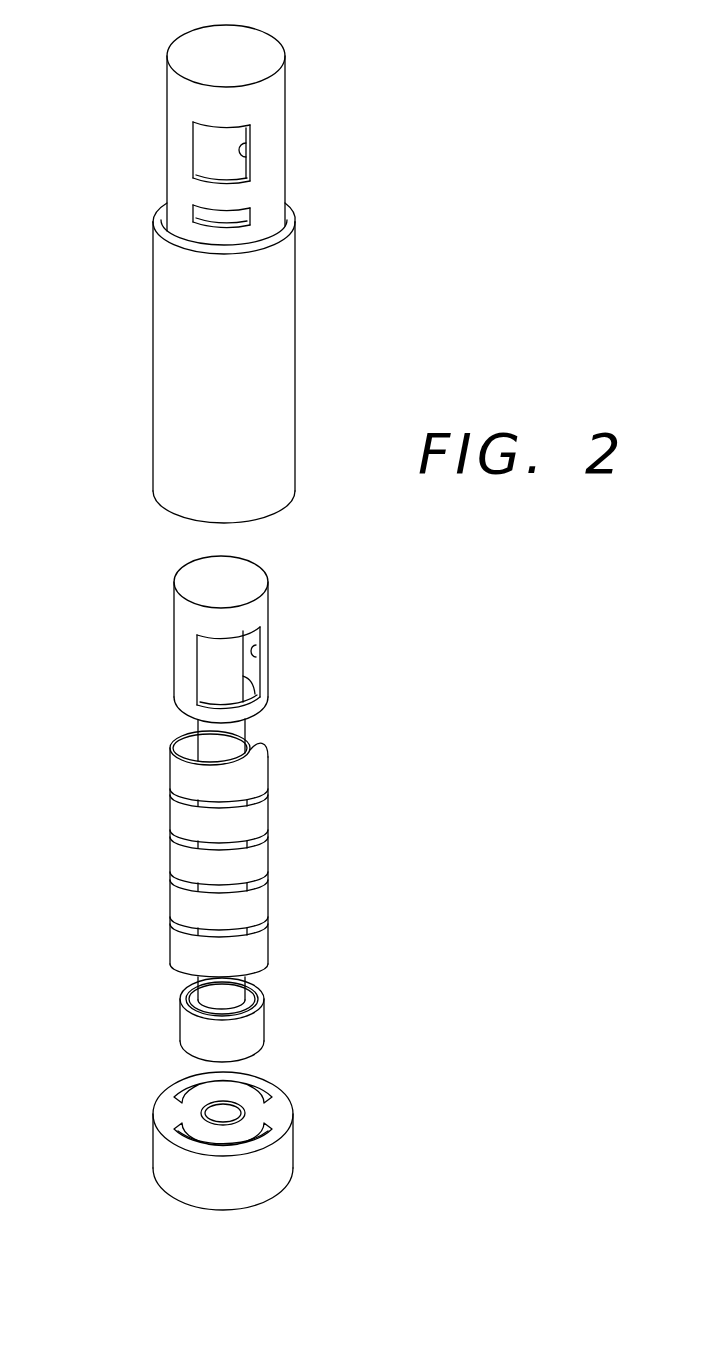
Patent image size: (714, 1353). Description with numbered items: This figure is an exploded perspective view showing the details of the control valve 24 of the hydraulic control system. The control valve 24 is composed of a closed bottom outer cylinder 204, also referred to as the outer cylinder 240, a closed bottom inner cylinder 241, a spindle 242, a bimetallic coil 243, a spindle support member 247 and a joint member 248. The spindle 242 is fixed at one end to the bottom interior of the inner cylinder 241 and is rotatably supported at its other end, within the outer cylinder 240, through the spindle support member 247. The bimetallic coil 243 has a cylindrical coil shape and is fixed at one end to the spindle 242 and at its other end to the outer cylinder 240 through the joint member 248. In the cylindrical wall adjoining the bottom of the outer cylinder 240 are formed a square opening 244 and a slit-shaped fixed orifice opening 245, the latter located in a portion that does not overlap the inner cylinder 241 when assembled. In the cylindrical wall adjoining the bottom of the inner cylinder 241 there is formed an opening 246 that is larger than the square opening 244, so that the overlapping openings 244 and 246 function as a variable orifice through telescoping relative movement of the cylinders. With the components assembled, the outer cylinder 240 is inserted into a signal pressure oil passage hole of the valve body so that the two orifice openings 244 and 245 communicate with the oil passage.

The control valve 24 is at (138, 124).
The closed bottom outer cylinder 204 is at (287, 88).
The square opening 244 is at (247, 152).
The slit-shaped fixed orifice opening 245 is at (203, 227).
The outer cylinder 240 is at (293, 290).
The closed bottom inner cylinder 241 is at (268, 598).
The opening 246 is at (257, 662).
The spindle 242 is at (208, 731).
The bimetallic coil 243 is at (263, 840).
The joint member 248 is at (258, 1020).
The spindle support member 247 is at (283, 1150).